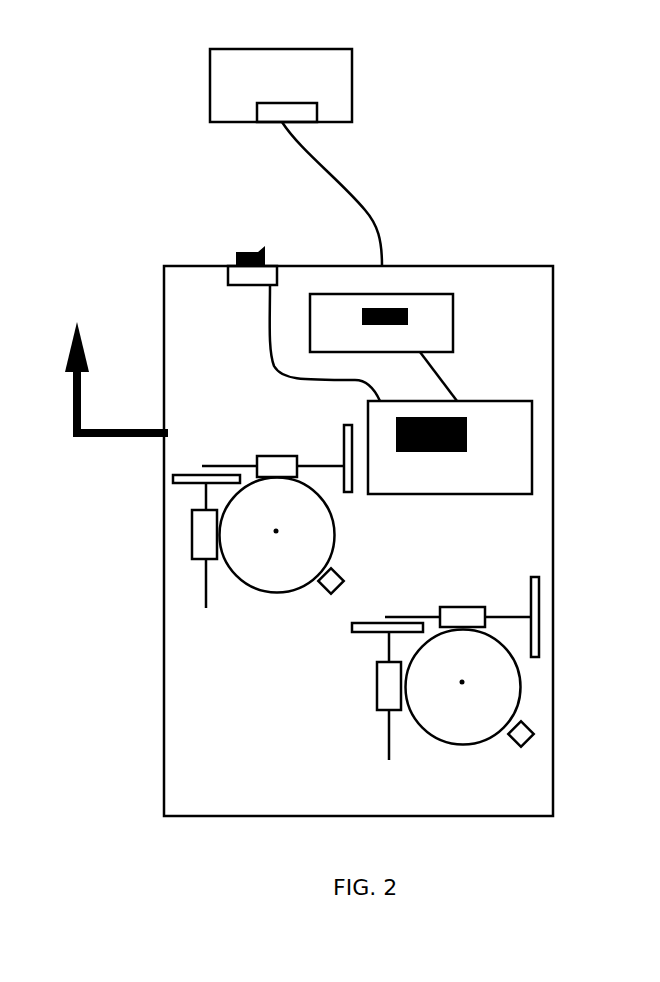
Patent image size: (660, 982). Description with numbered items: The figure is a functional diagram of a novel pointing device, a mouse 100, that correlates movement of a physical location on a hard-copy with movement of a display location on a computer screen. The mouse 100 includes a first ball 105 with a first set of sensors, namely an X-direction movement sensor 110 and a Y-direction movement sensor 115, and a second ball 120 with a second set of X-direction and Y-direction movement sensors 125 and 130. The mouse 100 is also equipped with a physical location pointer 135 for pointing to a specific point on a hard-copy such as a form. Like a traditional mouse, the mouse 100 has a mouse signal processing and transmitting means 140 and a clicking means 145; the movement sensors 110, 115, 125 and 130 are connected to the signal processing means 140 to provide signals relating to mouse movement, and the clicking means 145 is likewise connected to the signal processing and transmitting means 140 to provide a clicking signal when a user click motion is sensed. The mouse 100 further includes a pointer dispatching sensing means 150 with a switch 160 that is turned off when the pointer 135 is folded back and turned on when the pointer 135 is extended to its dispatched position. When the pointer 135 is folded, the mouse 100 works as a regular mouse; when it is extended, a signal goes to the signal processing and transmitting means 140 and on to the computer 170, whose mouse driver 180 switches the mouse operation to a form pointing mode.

The mouse 100 is at (520, 150).
The first ball 105 is at (510, 696).
The X-direction movement sensor 110 is at (472, 595).
The Y-direction movement sensor 115 is at (360, 685).
The second ball 120 is at (322, 537).
The X-direction movement sensor 125 is at (275, 447).
The Y-direction movement sensor 130 is at (187, 532).
The physical location pointer 135 is at (78, 322).
The mouse signal processing and transmitting means 140 is at (484, 412).
The clicking means 145 is at (442, 317).
The pointer dispatching sensing means 150 is at (245, 275).
The switch 160 is at (253, 250).
The computer 170 is at (281, 85).
The mouse driver 180 is at (273, 115).